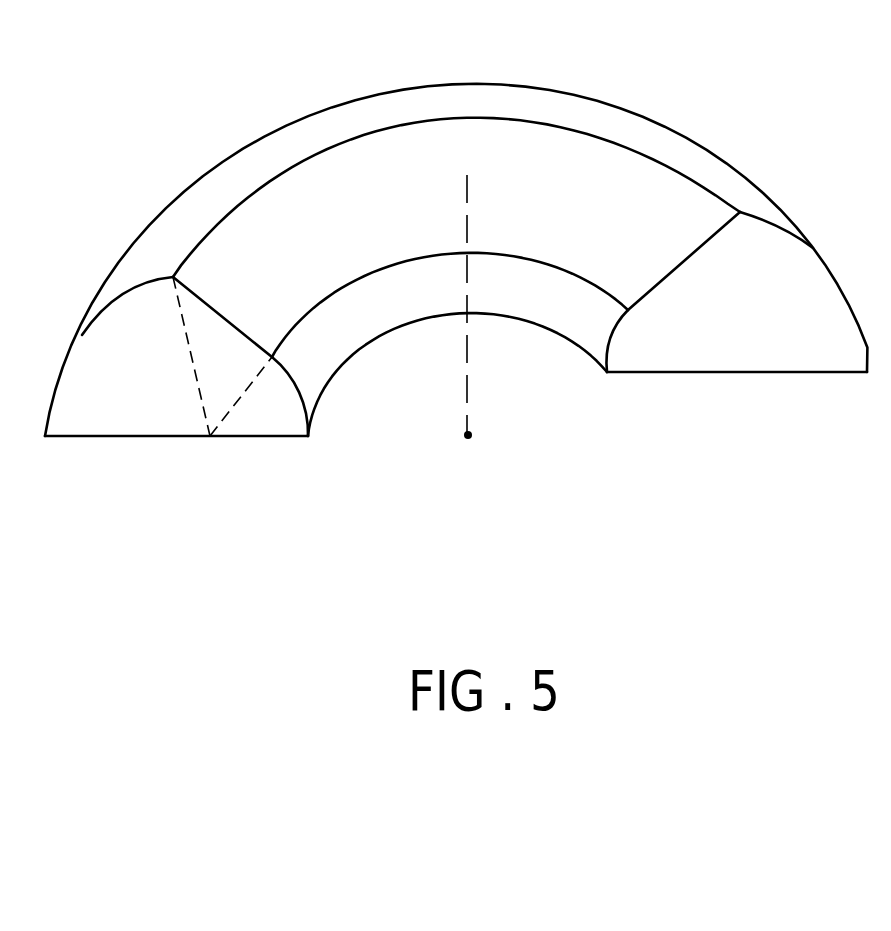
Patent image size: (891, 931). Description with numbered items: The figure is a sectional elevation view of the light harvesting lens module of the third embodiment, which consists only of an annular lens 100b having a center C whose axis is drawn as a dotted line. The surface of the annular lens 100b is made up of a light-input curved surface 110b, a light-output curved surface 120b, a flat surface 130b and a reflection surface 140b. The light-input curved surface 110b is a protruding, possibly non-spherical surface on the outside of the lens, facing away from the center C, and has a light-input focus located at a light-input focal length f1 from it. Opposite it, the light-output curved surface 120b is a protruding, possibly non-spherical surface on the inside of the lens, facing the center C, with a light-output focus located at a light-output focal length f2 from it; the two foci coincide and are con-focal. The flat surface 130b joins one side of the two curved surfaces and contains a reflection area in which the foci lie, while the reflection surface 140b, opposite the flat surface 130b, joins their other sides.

The annular lens 100b is at (623, 118).
The light-input curved surface 110b is at (106, 306).
The light-output curved surface 120b is at (288, 374).
The flat surface 130b is at (210, 437).
The reflection surface 140b is at (208, 310).
The light-input focal length f1 is at (210, 436).
The light-output focal length f2 is at (297, 394).
The center C is at (472, 437).